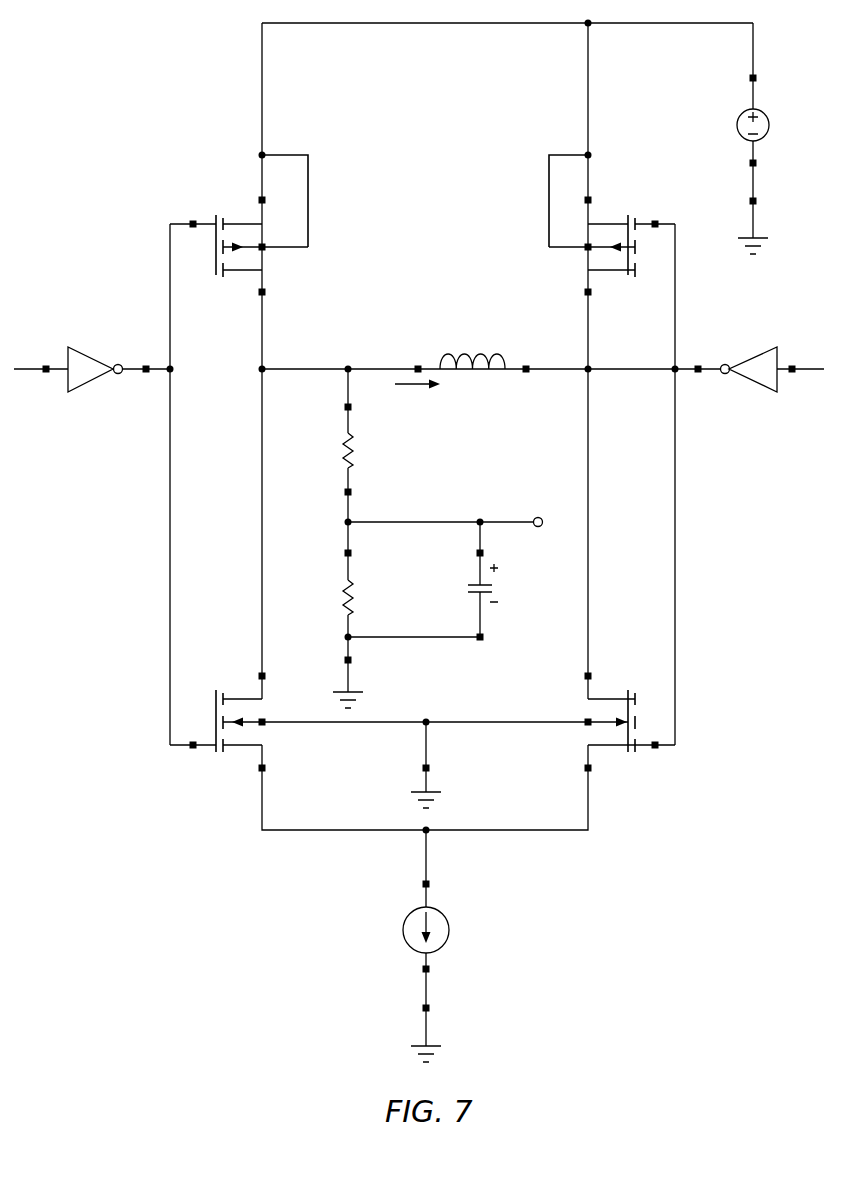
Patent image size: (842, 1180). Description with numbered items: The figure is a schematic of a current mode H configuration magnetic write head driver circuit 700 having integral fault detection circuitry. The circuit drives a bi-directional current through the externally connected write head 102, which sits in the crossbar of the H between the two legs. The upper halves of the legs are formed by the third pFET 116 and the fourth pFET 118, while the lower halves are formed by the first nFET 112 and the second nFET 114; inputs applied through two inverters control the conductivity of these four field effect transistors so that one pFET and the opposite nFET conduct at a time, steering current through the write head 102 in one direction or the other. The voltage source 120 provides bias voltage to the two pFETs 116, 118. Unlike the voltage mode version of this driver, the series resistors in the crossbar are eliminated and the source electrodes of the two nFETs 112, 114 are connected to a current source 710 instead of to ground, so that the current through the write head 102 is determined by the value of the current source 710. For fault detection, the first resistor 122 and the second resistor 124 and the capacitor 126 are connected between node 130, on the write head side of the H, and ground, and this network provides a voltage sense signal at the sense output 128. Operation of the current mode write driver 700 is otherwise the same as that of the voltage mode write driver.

The current mode H configuration magnetic write head driver circuit 700 is at (420, 541).
The write head 102 is at (472, 353).
The nFET M1 112 is at (220, 754).
The nFET M2 114 is at (636, 752).
The pFET M3 116 is at (212, 217).
The pFET M4 118 is at (638, 214).
The voltage source V1 120 is at (770, 125).
The resistor R0 122 is at (341, 453).
The resistor R2 124 is at (343, 600).
The capacitor C1 126 is at (498, 588).
The output 128 is at (537, 516).
The node 130 is at (350, 356).
The current source I1 710 is at (449, 930).